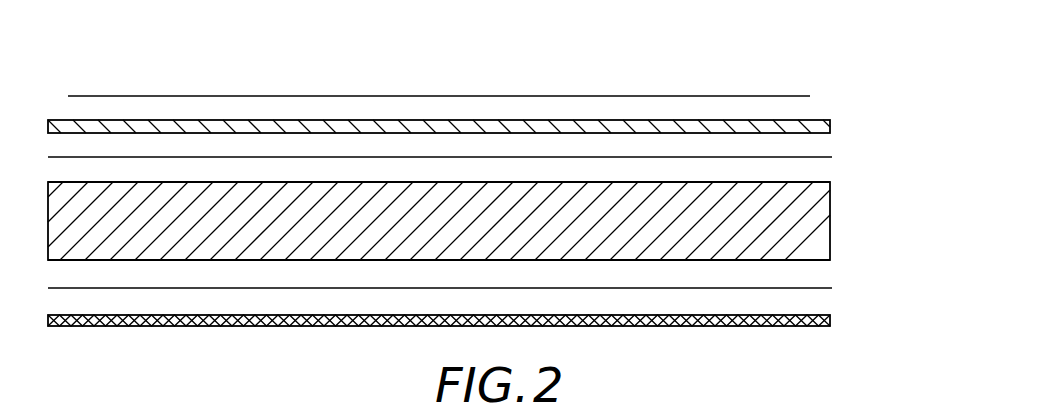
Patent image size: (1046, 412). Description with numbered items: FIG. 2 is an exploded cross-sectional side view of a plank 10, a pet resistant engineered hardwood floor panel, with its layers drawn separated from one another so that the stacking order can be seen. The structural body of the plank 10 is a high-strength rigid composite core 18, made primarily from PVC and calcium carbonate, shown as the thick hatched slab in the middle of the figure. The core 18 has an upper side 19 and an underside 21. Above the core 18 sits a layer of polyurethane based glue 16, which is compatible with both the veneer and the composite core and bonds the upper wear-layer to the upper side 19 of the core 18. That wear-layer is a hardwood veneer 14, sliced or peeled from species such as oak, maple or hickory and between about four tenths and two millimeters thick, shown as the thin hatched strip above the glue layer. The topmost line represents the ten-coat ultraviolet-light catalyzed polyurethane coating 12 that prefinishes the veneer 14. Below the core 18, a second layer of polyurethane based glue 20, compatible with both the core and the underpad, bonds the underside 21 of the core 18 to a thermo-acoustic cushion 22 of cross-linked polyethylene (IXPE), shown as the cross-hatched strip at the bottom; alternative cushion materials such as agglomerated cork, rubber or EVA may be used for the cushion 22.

The plank 10 is at (818, 33).
The polyurethane coating 12 is at (757, 96).
The hardwood veneer 14 is at (835, 121).
The polyurethane based glue layer 16 is at (832, 157).
The composite core 18 is at (836, 218).
The upper side of the core 19 is at (818, 181).
The polyurethane based glue 20 is at (832, 288).
The underside of the core 21 is at (808, 261).
The thermo-acoustic cushion 22 is at (834, 323).